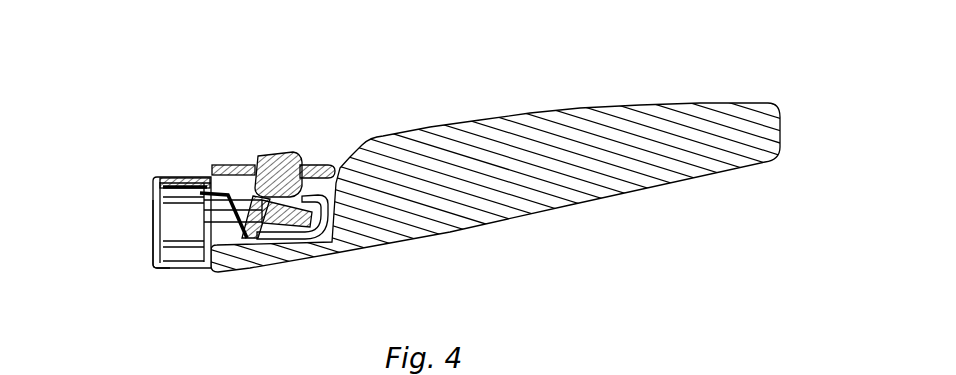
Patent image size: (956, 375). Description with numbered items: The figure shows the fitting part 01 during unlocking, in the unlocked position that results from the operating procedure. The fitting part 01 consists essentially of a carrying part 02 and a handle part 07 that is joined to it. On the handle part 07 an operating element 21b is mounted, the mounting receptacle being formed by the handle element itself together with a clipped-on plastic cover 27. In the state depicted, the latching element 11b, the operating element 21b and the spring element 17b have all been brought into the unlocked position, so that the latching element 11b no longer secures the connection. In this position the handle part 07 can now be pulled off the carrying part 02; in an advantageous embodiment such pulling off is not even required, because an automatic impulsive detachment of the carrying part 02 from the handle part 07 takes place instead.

The fitting part 01 is at (127, 52).
The carrying part 02 is at (165, 176).
The handle part 07 is at (483, 152).
The latching element 11b is at (268, 212).
The spring element 17b is at (150, 225).
The operating element 21b is at (267, 156).
The plastic cover 27 is at (310, 163).